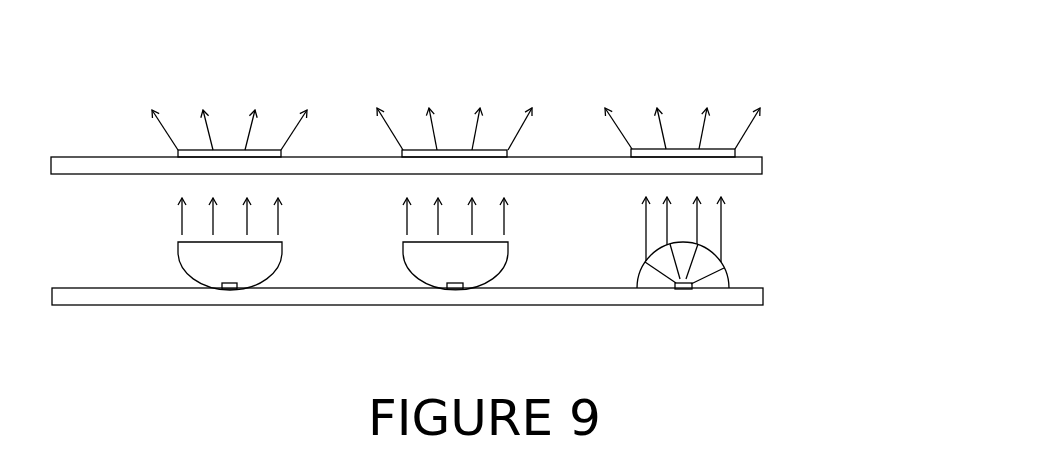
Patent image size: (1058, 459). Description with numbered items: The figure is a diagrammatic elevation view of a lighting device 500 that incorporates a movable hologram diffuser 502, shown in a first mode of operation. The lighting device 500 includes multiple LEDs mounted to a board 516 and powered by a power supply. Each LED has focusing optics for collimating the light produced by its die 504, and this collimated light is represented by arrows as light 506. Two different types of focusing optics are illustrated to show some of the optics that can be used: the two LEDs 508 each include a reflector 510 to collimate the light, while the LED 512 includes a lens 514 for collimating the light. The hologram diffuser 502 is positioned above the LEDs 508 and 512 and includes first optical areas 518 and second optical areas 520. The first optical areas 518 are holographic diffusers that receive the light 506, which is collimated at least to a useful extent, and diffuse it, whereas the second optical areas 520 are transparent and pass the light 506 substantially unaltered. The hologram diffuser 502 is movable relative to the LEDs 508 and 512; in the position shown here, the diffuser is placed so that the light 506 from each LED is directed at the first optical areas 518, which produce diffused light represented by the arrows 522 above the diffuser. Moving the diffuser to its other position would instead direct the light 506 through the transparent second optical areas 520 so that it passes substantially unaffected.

The lighting device 500 is at (663, 60).
The hologram diffuser 502 is at (747, 166).
The die 504 is at (228, 290).
The light 506 is at (213, 228).
The LED 508 is at (222, 315).
The reflector 510 is at (197, 266).
The LED 512 is at (650, 315).
The lens 514 is at (717, 278).
The board 516 is at (78, 308).
The first optical areas 518 is at (263, 148).
The second optical areas 520 is at (108, 174).
The diffused light 522 is at (210, 128).